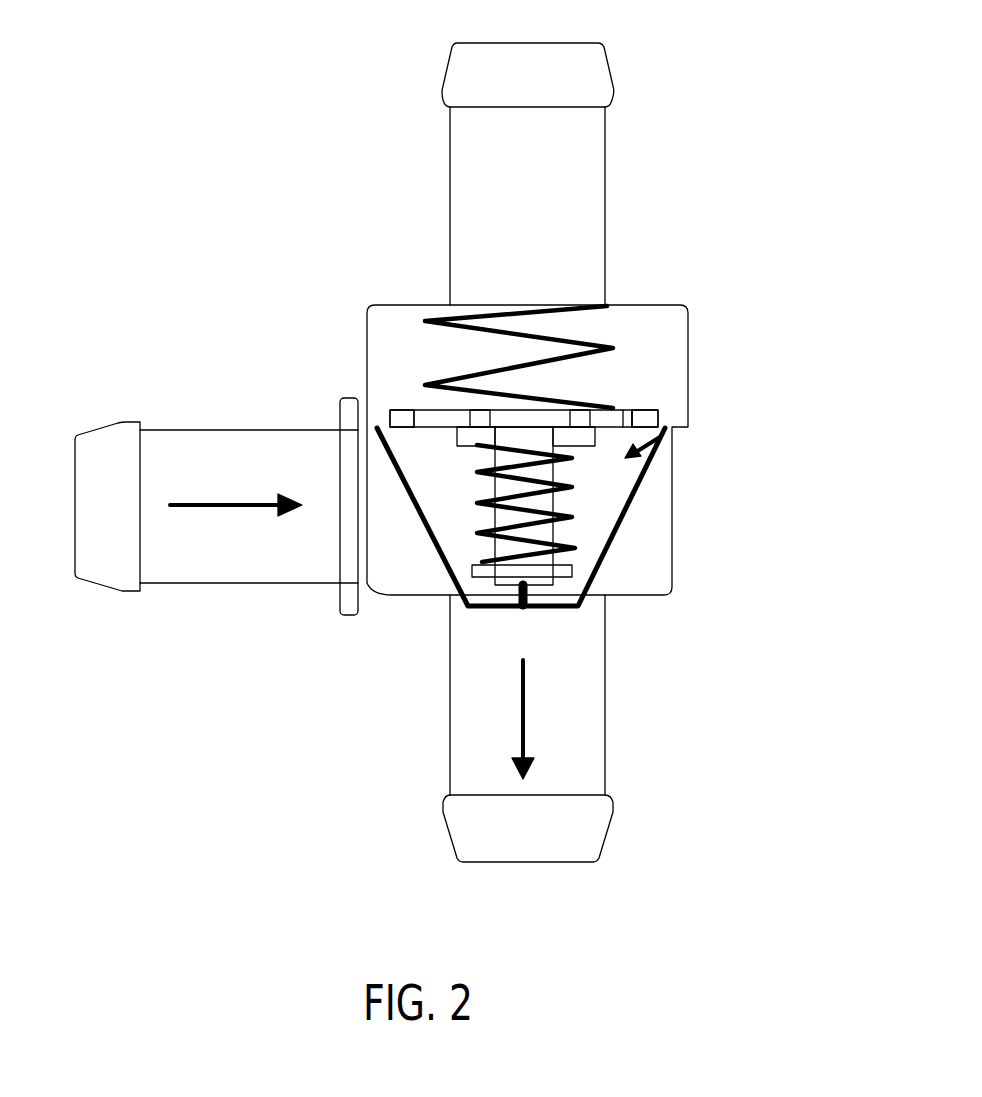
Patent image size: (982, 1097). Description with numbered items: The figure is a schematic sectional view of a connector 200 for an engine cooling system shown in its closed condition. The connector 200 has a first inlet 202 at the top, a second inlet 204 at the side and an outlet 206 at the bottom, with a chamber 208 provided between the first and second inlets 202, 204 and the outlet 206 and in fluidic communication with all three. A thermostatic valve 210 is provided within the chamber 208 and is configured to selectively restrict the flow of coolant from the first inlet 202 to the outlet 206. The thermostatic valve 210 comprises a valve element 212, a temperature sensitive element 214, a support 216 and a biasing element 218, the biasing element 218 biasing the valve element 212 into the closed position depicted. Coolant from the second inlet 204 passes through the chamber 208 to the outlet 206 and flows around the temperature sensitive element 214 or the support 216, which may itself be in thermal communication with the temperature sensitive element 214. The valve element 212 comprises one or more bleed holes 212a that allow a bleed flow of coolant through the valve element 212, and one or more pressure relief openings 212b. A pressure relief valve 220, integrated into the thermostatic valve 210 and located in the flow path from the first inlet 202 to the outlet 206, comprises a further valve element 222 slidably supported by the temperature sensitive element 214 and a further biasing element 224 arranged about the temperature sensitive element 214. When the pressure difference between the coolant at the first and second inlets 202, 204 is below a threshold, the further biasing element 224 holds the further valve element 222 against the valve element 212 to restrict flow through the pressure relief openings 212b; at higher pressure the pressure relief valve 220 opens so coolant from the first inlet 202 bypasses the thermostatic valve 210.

The connector 200 is at (712, 245).
The first inlet 202 is at (607, 72).
The second inlet 204 is at (110, 422).
The outlet 206 is at (610, 838).
The chamber 208 is at (650, 500).
The thermostatic valve 210 is at (629, 552).
The valve element 212 is at (658, 411).
The bleed holes 212a is at (413, 410).
The pressure relief openings 212b is at (482, 410).
The temperature sensitive element 214 is at (487, 560).
The support 216 is at (600, 570).
The biasing element 218 is at (608, 343).
The pressure relief valve 220 is at (670, 440).
The further valve element 222 is at (455, 440).
The further biasing element 224 is at (477, 503).